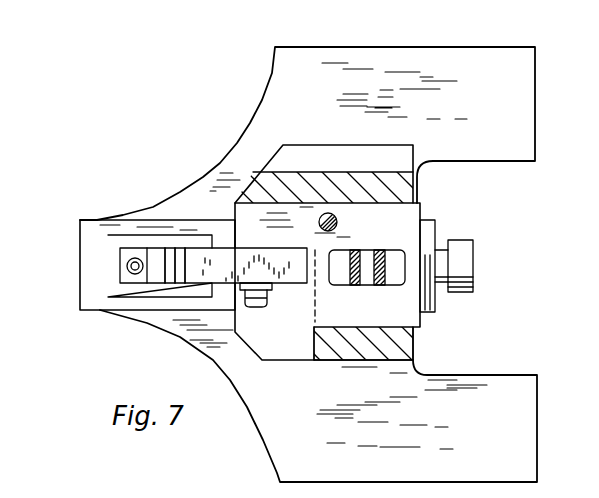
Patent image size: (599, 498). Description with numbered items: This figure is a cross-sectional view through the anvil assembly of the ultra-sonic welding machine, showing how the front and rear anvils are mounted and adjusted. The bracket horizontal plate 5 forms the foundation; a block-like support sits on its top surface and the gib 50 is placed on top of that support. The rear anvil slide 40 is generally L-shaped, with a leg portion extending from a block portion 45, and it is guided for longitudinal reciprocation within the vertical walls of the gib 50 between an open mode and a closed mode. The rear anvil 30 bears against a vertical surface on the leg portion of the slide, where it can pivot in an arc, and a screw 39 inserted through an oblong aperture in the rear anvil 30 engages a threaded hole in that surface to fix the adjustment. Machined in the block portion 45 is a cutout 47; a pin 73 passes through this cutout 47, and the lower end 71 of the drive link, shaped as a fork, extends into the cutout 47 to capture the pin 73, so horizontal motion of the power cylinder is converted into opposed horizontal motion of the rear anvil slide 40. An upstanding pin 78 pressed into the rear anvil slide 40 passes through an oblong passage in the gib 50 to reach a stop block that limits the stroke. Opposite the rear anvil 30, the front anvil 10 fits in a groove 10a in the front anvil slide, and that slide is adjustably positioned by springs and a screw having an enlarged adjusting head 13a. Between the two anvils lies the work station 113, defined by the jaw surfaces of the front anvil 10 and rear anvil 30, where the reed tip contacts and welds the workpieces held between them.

The bracket horizontal plate 5 is at (500, 96).
The gib 50 is at (377, 371).
The rear anvil slide 40 is at (424, 192).
The rear anvil 30 is at (192, 246).
The front anvil 10 is at (114, 264).
The groove 10a is at (134, 276).
The work station 113 is at (176, 285).
The screw 39 is at (253, 308).
The upstanding pin 78 is at (330, 213).
The lower end of the link 71 is at (381, 250).
The block portion 45 is at (352, 315).
The pin 73 is at (372, 268).
The cutout 47 is at (400, 278).
The enlarged adjusting head 13a is at (469, 244).